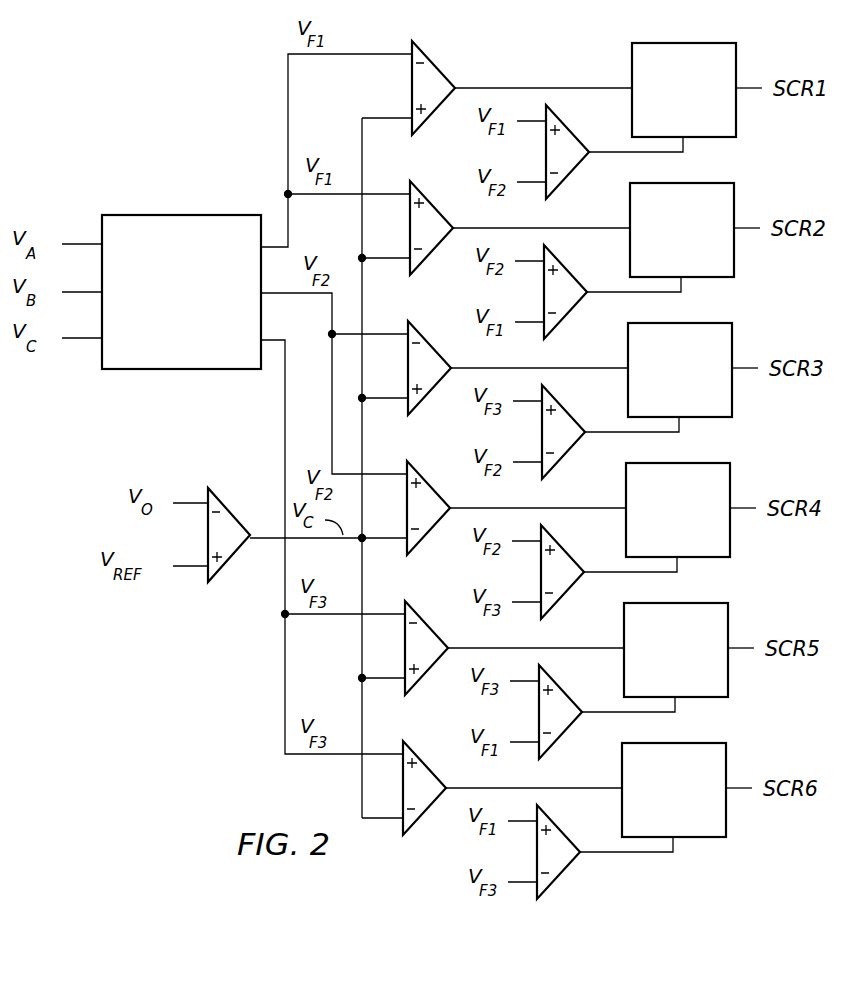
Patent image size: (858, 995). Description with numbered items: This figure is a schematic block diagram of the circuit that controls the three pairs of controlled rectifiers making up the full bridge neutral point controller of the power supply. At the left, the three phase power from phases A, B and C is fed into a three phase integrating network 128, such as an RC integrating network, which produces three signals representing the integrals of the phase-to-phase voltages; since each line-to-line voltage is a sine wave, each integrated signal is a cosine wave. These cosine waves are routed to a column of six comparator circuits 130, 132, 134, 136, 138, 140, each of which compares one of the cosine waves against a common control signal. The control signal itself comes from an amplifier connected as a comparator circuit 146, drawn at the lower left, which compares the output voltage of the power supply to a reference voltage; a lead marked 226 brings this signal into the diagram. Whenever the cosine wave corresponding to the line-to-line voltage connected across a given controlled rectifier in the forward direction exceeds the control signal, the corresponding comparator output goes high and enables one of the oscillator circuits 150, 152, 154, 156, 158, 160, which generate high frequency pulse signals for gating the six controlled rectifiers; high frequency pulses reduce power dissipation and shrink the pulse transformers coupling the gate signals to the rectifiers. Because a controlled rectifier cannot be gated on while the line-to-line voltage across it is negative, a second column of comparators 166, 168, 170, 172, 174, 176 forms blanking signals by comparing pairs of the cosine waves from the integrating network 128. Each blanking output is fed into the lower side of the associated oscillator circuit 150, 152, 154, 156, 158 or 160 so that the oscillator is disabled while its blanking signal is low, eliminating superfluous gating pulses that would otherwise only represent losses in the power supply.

The three phase integrating network 128 is at (208, 214).
The comparator circuit 130 is at (424, 47).
The comparator circuit 132 is at (436, 208).
The comparator circuit 134 is at (434, 348).
The comparator circuit 136 is at (433, 488).
The comparator circuit 138 is at (431, 628).
The comparator circuit 140 is at (429, 768).
The comparator circuit 146 is at (228, 558).
The oscillator circuit 150 is at (632, 67).
The oscillator circuit 152 is at (630, 207).
The oscillator circuit 154 is at (628, 347).
The oscillator circuit 156 is at (626, 487).
The oscillator circuit 158 is at (624, 627).
The oscillator circuit 160 is at (622, 767).
The comparator 166 is at (602, 125).
The comparator 168 is at (600, 265).
The comparator 170 is at (598, 405).
The comparator 172 is at (597, 545).
The comparator 174 is at (595, 685).
The comparator 176 is at (593, 825).
The control circuit 226 is at (15, 514).